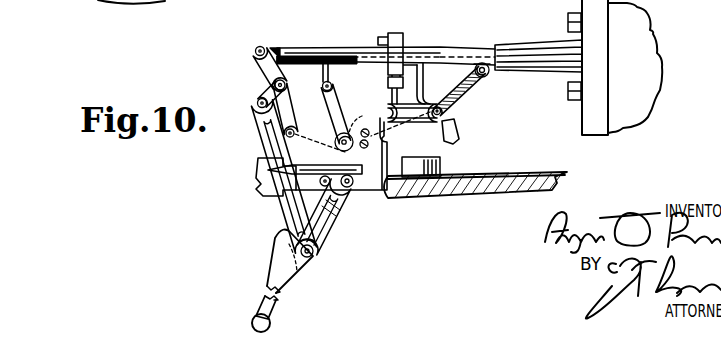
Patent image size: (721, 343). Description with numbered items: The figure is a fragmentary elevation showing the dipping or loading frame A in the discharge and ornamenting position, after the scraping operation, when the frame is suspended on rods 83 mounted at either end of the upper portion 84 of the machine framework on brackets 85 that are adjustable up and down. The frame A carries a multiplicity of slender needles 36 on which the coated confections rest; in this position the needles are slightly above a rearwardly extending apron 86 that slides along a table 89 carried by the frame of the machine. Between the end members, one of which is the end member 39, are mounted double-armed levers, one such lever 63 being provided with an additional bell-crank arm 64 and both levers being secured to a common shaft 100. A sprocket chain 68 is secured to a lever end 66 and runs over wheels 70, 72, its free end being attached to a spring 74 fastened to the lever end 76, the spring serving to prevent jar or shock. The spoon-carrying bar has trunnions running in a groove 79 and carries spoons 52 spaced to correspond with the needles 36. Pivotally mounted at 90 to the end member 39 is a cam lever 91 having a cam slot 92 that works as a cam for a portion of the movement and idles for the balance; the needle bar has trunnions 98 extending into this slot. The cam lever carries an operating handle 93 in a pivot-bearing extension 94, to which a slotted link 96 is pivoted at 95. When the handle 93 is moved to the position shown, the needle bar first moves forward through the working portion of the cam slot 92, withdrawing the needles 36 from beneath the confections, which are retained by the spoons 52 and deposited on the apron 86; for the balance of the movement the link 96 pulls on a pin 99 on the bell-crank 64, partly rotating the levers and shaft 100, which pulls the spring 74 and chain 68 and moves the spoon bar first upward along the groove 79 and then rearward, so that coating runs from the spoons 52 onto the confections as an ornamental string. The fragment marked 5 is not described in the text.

The fragment 5 is at (133, 3).
The needles 36 is at (338, 165).
The end member 39 is at (299, 68).
The spoons 52 is at (459, 124).
The double-armed lever 63 is at (268, 68).
The bell-crank arm 64 is at (265, 96).
The lever end 66 is at (272, 135).
The sprocket chain 68 is at (336, 150).
The wheel 70 is at (355, 115).
The wheel 72 is at (492, 77).
The spring 74 is at (334, 47).
The lever end 76 is at (262, 45).
The groove 79 is at (391, 102).
The rods 83 is at (470, 54).
The upper portion of the framework 84 is at (656, 55).
The brackets 85 is at (527, 53).
The apron 86 is at (500, 172).
The table 89 is at (518, 190).
The pivot 90 is at (350, 187).
The cam lever 91 is at (318, 230).
The cam slot 92 is at (330, 212).
The operating handle 93 is at (263, 308).
The pivot-bearing extension 94 is at (302, 265).
The pivot 95 is at (312, 257).
The slotted link 96 is at (266, 152).
The trunnions 98 is at (281, 192).
The pin 99 is at (285, 133).
The common shaft 100 is at (287, 88).
The dipping or loading frame A is at (378, 152).